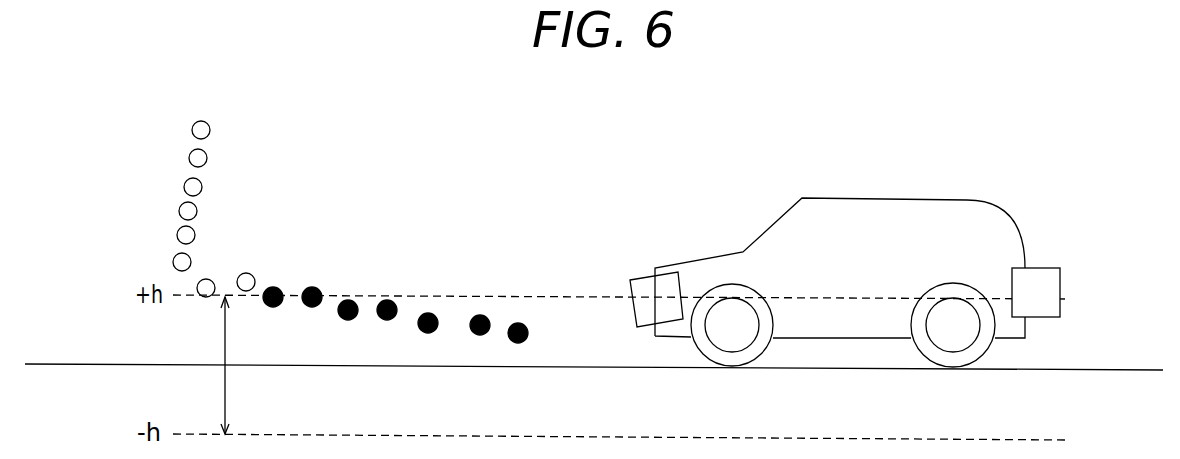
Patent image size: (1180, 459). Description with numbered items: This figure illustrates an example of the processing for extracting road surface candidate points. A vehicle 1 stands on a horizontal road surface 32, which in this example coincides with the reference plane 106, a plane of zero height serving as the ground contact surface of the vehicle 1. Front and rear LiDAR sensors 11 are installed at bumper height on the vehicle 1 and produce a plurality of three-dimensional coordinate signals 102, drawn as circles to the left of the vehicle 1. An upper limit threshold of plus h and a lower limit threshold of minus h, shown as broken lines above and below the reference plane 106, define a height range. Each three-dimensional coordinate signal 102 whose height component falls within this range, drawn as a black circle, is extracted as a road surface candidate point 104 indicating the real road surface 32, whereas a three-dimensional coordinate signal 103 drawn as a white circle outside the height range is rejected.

The vehicle 1 is at (920, 200).
The LiDAR sensor 11 is at (640, 277).
The road surface 32 is at (594, 309).
The reference plane 106 is at (580, 365).
The three-dimensional coordinate signal 102 is at (350, 232).
The three-dimensional coordinate signal of a white circle 103 is at (208, 158).
The road surface candidate point 104 is at (387, 299).